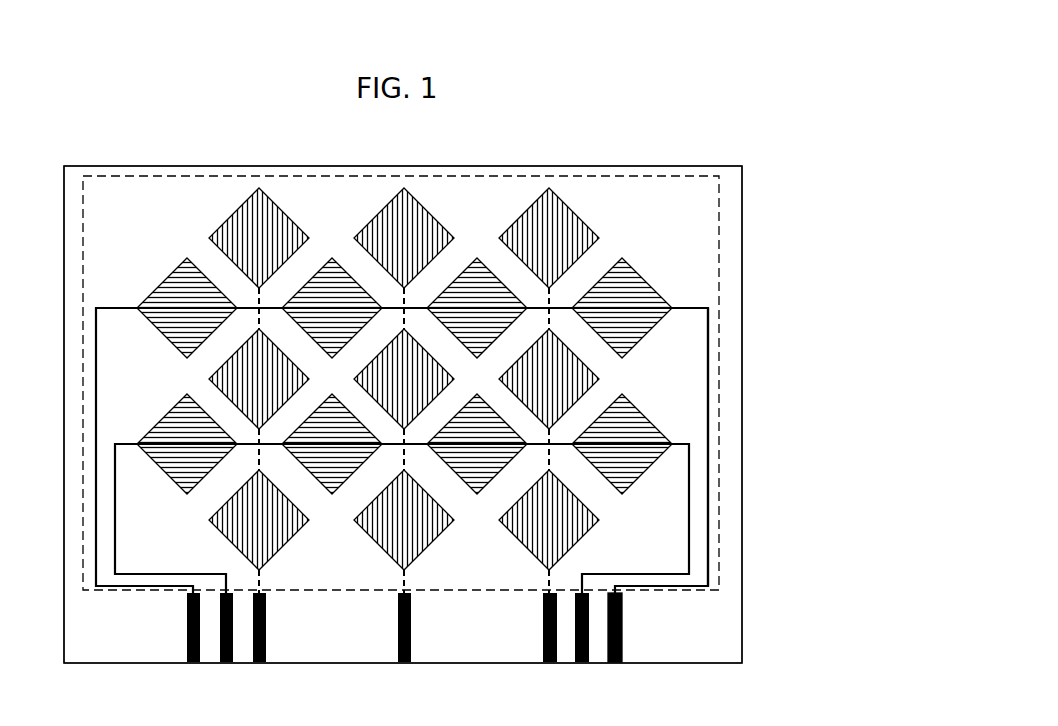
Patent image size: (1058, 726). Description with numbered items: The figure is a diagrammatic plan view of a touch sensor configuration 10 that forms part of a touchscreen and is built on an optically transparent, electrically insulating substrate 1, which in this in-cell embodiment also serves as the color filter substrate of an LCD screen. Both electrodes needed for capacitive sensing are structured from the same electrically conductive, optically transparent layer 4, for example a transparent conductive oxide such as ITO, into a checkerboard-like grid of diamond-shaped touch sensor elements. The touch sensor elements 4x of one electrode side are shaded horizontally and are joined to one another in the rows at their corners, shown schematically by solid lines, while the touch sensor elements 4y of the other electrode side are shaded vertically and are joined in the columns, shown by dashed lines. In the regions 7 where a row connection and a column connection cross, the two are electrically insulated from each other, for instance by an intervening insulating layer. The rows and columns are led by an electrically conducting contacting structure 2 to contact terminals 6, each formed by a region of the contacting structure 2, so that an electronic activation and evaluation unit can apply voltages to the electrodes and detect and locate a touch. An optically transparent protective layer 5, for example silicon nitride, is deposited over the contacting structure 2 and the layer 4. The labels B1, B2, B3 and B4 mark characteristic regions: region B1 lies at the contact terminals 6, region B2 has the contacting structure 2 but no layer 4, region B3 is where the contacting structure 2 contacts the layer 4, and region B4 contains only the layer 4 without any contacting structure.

The touch sensor configuration 10 is at (870, 142).
The optically transparent substrate 1 is at (726, 194).
The contacting structure 2 is at (710, 473).
The electrically conductive, optically transparent layer 4 is at (416, 343).
The touch sensor elements 4x is at (635, 296).
The touch sensor elements 4y is at (560, 214).
The protective layer 5 is at (713, 328).
The contact terminals 6 is at (622, 640).
The regions 7 is at (262, 302).
The region B1 is at (626, 622).
The region B2 is at (715, 532).
The region B3 is at (673, 441).
The region B4 is at (660, 300).